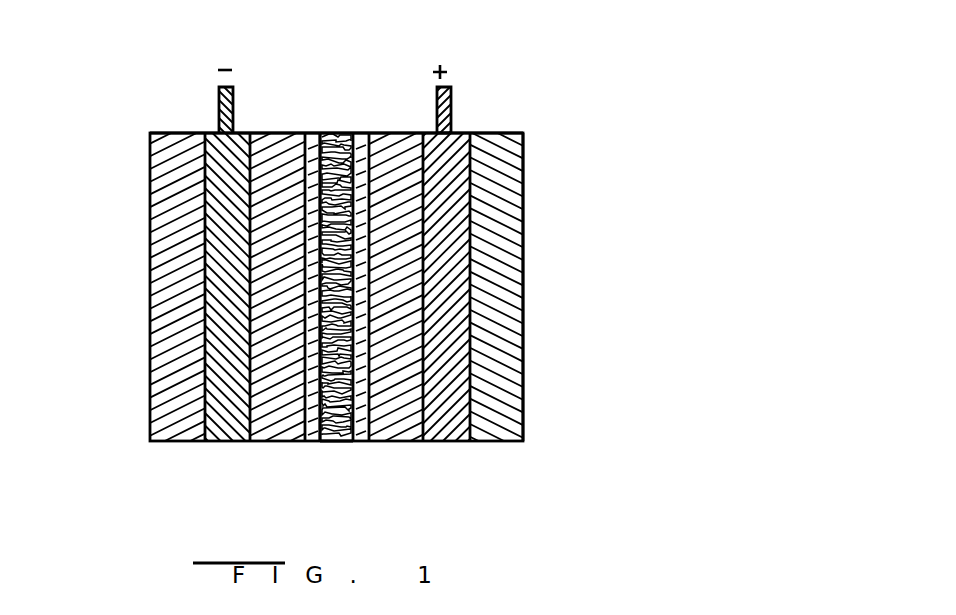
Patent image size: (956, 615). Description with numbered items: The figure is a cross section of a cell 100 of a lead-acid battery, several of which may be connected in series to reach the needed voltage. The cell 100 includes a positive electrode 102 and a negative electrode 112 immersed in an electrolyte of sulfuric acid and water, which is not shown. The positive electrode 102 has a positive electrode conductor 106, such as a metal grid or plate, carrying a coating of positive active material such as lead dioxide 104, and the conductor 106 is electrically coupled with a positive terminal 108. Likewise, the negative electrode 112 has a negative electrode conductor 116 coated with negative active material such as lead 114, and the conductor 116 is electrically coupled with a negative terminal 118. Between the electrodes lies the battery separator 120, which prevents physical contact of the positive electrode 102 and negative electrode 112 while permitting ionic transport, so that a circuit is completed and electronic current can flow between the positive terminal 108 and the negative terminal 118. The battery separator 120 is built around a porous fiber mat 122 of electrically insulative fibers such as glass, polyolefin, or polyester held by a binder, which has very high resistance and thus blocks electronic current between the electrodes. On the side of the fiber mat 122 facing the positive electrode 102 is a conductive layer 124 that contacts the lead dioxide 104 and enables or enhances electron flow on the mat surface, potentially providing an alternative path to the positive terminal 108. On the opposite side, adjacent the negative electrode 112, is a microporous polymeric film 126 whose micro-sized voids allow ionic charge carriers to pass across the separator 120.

The cell 100 is at (575, 143).
The positive electrode 102 is at (482, 57).
The lead dioxide 104 is at (400, 441).
The positive electrode conductor 106 is at (470, 297).
The positive terminal 108 is at (451, 97).
The negative electrode 112 is at (93, 92).
The lead 114 is at (181, 441).
The negative electrode conductor 116 is at (200, 355).
The negative terminal 118 is at (219, 108).
The battery separator 120 is at (333, 448).
The porous fiber mat 122 is at (336, 135).
The conductive layer 124 is at (362, 135).
The polymeric film 126 is at (312, 138).